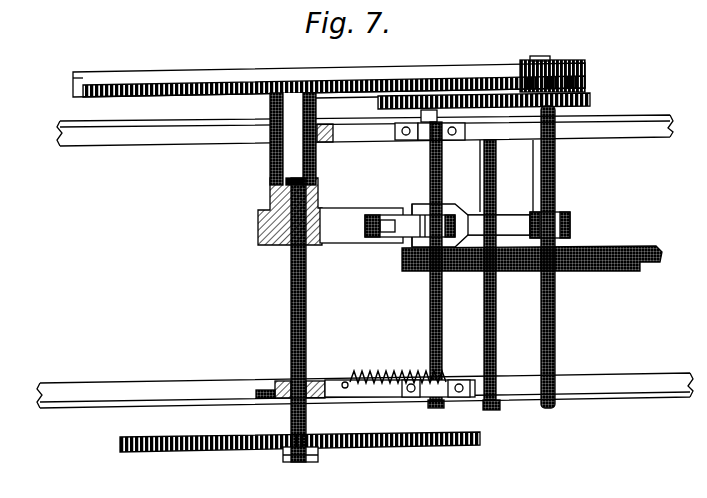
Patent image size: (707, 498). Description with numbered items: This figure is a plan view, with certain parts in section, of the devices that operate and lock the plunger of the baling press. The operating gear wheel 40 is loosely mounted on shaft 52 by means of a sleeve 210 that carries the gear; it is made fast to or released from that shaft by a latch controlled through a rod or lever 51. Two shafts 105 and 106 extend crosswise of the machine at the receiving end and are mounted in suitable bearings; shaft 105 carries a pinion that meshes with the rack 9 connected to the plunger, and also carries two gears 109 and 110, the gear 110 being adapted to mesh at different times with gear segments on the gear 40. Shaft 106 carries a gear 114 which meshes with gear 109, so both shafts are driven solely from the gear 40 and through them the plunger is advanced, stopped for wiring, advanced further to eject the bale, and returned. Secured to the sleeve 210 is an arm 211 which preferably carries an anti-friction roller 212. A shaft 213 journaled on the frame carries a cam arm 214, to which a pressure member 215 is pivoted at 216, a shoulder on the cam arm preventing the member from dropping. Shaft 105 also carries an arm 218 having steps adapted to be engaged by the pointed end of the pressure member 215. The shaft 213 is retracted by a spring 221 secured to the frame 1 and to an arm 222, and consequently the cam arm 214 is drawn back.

The lower frame rail 1 is at (365, 402).
The rack 9 is at (662, 256).
The operating gear wheel 40 is at (268, 72).
The rod or lever 51 is at (258, 453).
The fulcrum 52 is at (291, 288).
The shaft 105 is at (557, 182).
The shaft 106 is at (485, 171).
The gear 109 is at (568, 111).
The gear 110 is at (586, 83).
The gear 114 is at (592, 101).
The sleeve 210 is at (313, 200).
The arm 211 is at (343, 241).
The anti-friction roller 212 is at (372, 246).
The shaft 213 is at (430, 312).
The cam arm 214 is at (418, 207).
The pressure member 215 is at (512, 222).
The pivot 216 is at (422, 207).
The arm 218 is at (572, 220).
The spring 221 is at (385, 372).
The arm 222 is at (480, 404).